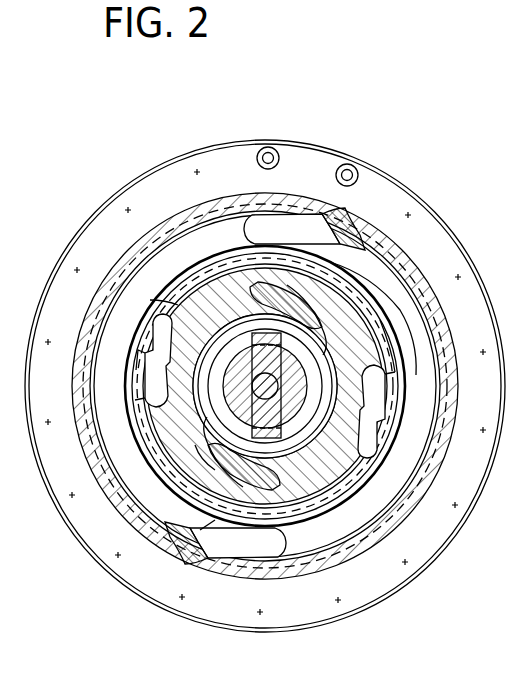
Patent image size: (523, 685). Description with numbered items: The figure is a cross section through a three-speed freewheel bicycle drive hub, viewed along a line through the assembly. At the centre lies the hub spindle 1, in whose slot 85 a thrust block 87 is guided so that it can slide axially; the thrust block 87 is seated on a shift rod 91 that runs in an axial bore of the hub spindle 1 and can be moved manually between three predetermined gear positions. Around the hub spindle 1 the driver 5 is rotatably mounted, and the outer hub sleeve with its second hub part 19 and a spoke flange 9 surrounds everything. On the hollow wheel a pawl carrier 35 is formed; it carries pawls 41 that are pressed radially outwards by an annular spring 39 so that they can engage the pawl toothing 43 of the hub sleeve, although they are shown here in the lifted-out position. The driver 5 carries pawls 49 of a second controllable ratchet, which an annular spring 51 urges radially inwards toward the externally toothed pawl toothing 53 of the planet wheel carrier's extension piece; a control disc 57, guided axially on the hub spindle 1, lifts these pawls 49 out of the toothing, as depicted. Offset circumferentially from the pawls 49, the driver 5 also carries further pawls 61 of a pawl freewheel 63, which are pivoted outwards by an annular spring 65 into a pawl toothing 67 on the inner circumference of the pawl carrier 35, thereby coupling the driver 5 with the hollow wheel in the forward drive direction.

The hub spindle 1 is at (343, 495).
The driver 5 is at (323, 523).
The spoke flange 9 is at (106, 218).
The second hub part 19 is at (213, 197).
The pawl carrier 35 is at (177, 277).
The annular spring 39 is at (322, 296).
The pawls 41 is at (292, 222).
The pawl toothing 43 is at (350, 243).
The pawls 49 is at (325, 300).
The annular spring 51 is at (330, 318).
The pawl toothing 53 is at (392, 365).
The control disc 57 is at (195, 445).
The pawls 61 is at (160, 362).
The pawl freewheel 63 is at (148, 345).
The annular spring 65 is at (178, 305).
The pawl toothing 67 is at (150, 395).
The slot 85 is at (200, 530).
The thrust block 87 is at (250, 364).
The shift rod 91 is at (262, 392).